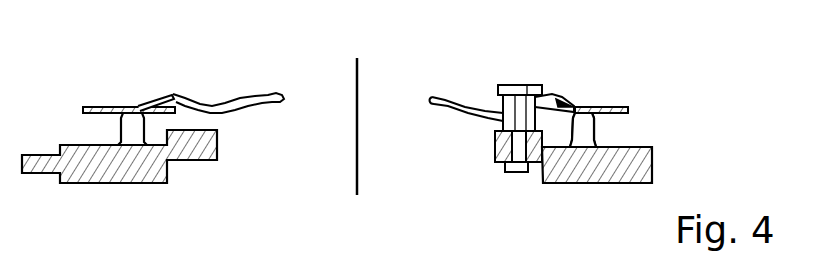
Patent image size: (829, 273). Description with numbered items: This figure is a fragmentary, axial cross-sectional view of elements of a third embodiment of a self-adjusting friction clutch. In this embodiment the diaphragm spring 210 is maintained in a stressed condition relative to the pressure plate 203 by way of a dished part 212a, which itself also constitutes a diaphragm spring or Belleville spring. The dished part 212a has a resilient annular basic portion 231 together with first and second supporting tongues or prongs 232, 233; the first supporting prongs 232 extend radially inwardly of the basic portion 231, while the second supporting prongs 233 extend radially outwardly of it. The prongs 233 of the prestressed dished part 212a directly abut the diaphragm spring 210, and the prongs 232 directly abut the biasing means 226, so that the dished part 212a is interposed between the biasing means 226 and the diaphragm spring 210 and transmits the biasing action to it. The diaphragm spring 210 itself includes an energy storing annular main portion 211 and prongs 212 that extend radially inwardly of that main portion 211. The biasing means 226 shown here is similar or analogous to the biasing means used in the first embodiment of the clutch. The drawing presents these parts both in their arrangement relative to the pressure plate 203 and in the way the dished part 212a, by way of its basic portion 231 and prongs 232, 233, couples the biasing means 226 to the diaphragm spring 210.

The pressure plate 203 is at (100, 168).
The diaphragm spring 210 is at (92, 107).
The energy storing annular main portion 211 is at (617, 108).
The prongs 212 is at (440, 94).
The dished part 212a is at (557, 100).
The biasing means 226 is at (512, 123).
The resilient annular basic portion 231 is at (160, 98).
The first supporting prongs 232 is at (517, 85).
The second supporting prongs 233 is at (572, 103).